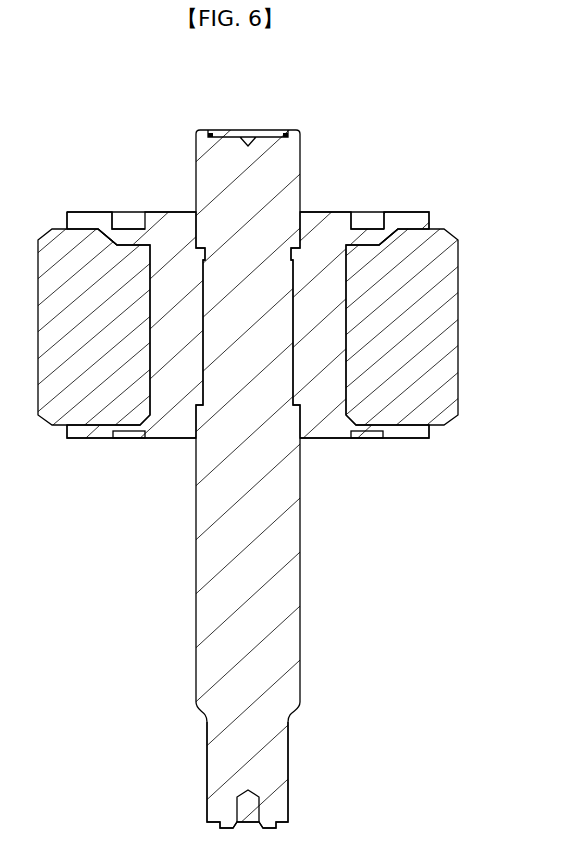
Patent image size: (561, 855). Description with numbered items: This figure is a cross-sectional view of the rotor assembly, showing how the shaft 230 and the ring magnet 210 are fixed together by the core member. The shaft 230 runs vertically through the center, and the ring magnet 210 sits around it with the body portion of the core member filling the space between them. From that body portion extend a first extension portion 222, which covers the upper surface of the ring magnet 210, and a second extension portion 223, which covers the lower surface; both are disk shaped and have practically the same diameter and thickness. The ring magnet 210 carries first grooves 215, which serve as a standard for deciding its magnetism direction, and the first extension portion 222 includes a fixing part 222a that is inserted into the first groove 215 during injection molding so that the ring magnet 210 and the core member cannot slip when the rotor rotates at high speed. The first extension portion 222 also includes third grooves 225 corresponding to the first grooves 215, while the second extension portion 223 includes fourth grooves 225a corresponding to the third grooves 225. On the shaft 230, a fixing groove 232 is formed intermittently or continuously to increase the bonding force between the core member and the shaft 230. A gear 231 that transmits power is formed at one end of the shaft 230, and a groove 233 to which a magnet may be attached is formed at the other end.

The ring magnet 210 is at (408, 318).
The first groove 215 is at (364, 250).
The first extension portion 222 is at (432, 216).
The fixing part 222a is at (391, 214).
The second extension portion 223 is at (431, 435).
The third groove 225 is at (362, 224).
The fourth groove 225a is at (372, 438).
The shaft 230 is at (291, 580).
The gear 231 is at (290, 787).
The fixing groove 232 is at (197, 370).
The groove 233 is at (281, 131).